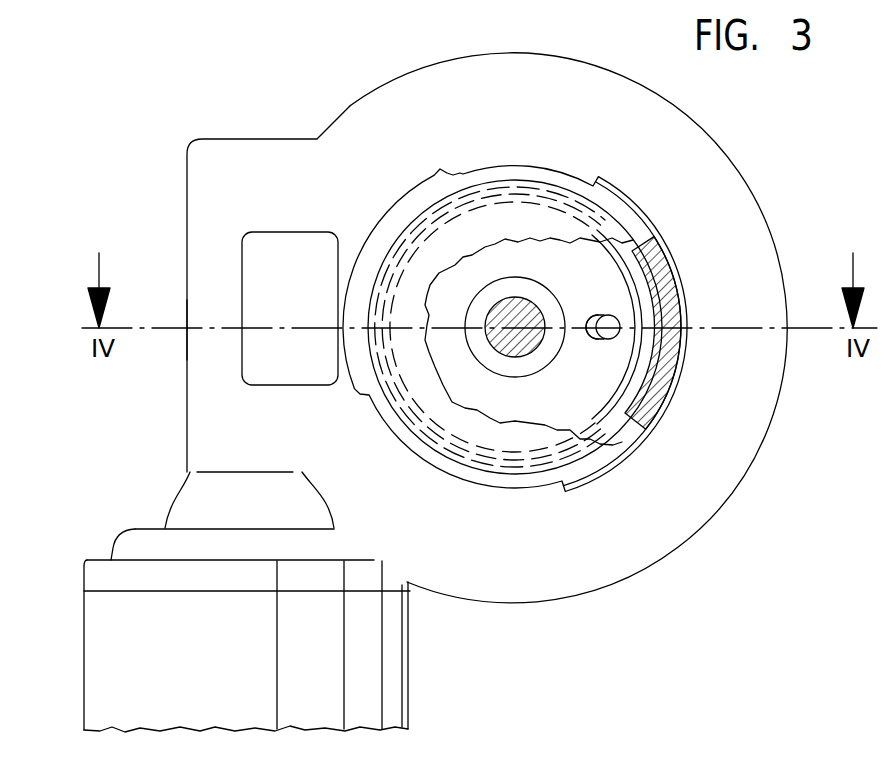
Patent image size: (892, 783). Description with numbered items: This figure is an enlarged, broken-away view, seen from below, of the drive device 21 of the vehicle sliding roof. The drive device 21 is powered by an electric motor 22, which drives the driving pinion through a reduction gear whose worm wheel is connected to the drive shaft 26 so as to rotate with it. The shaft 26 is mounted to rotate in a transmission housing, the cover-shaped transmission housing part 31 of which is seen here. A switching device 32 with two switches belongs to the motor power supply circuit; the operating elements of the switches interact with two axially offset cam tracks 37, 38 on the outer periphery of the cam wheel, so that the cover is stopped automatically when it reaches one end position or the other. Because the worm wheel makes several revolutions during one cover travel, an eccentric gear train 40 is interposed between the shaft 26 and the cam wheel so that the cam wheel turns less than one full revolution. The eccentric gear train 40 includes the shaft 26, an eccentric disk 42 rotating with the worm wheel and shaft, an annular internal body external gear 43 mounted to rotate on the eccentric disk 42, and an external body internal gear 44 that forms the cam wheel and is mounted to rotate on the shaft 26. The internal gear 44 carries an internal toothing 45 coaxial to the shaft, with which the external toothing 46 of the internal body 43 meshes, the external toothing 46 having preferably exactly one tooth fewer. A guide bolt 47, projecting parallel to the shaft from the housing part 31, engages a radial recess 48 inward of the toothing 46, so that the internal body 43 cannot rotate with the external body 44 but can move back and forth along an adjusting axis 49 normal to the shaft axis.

The drive device 21 is at (236, 98).
The electric motor 22 is at (398, 673).
The drive shaft 26 is at (530, 303).
The cover-shaped transmission housing part 31 is at (706, 186).
The switching device 32 is at (230, 258).
The cam track 37 is at (399, 207).
The cam track 38 is at (618, 190).
The eccentric gear train 40 is at (688, 243).
The eccentric disk 42 is at (489, 298).
The internal body external gear 43 is at (570, 400).
The external body internal gear 44 is at (673, 338).
The internal toothing 45 is at (675, 298).
The external toothing 46 is at (597, 336).
The guide bolt 47 is at (672, 370).
The radial recess 48 is at (617, 340).
The adjusting axis 49 is at (217, 328).